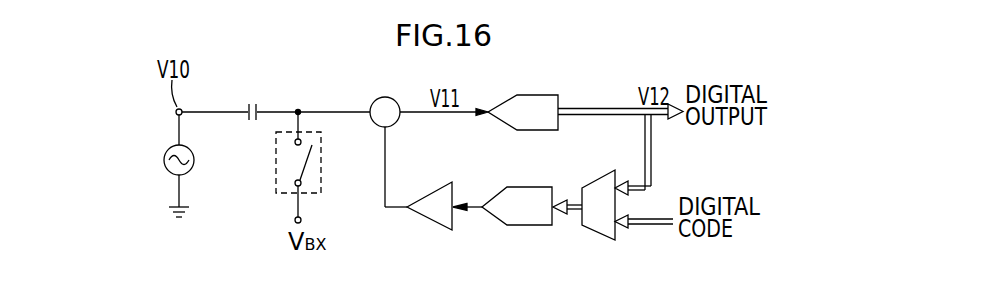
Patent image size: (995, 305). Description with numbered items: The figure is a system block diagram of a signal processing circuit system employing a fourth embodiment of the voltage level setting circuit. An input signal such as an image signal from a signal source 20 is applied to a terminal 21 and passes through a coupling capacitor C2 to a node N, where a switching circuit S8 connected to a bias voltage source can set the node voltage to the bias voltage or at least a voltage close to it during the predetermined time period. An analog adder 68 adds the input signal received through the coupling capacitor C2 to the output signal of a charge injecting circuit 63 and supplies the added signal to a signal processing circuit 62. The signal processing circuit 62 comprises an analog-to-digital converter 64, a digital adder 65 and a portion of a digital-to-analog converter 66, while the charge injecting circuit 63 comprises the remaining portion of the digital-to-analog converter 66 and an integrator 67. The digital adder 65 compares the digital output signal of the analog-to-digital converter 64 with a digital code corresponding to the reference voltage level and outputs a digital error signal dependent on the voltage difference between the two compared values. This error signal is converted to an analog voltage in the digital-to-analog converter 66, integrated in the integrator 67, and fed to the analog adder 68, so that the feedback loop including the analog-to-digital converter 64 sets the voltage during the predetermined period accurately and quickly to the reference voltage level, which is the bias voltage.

The signal source 20 is at (164, 160).
The terminal 21 is at (175, 112).
The coupling capacitor C2 is at (253, 96).
The node N is at (298, 106).
The switching circuit S8 is at (323, 163).
The signal processing circuit 62 is at (600, 96).
The charge injecting circuit 63 is at (466, 238).
The analog-to-digital converter 64 is at (540, 95).
The digital adder 65 is at (592, 228).
The digital-to-analog converter 66 is at (525, 227).
The integrator 67 is at (430, 218).
The analog adder 68 is at (387, 96).